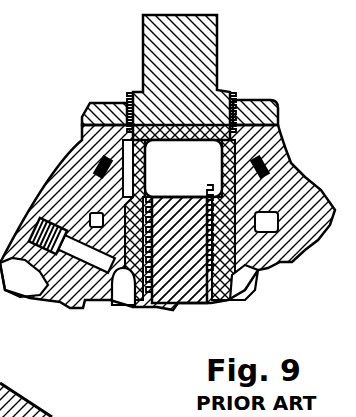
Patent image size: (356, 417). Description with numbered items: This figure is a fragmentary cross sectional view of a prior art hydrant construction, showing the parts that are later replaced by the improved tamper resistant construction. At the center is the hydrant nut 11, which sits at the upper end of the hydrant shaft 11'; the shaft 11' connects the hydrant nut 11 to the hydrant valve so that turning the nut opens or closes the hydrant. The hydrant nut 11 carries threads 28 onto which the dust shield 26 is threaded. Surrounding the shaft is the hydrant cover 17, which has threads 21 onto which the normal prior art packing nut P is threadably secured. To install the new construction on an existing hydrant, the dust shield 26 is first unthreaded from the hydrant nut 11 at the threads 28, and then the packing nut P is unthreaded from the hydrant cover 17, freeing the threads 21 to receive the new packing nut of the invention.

The hydrant nut 11 is at (211, 77).
The hydrant shaft 11' is at (161, 261).
The threads of hydrant cover 21 is at (148, 172).
The threads 28 is at (128, 100).
The dust shield 26 is at (90, 106).
The packing nut P is at (284, 140).
The hydrant cover 17 is at (80, 175).